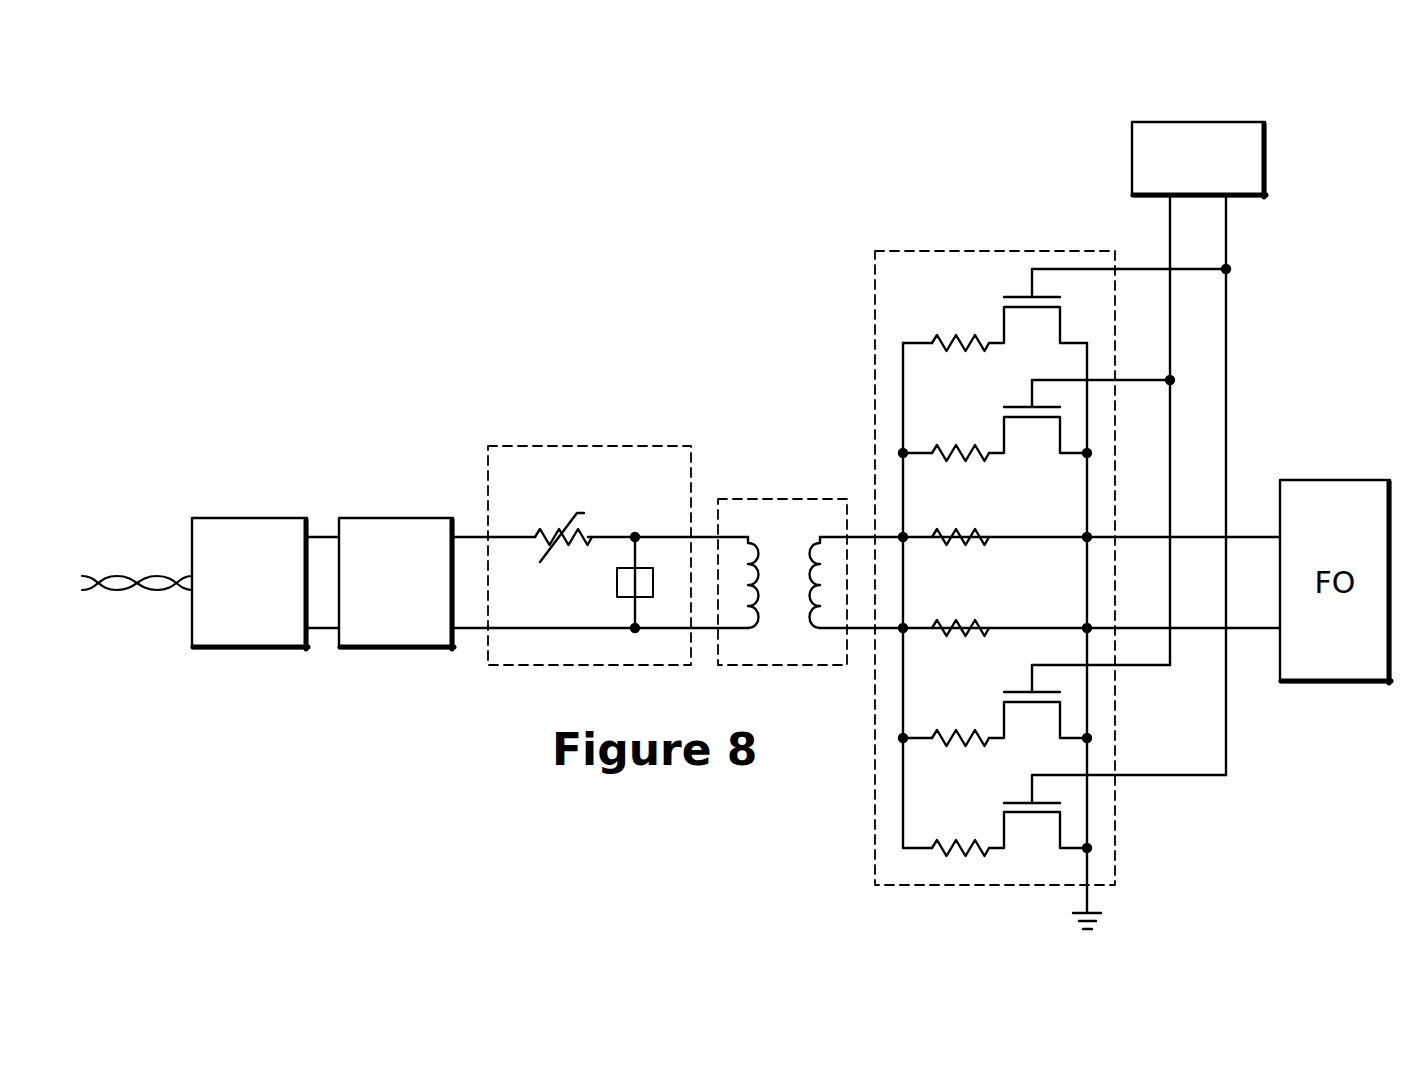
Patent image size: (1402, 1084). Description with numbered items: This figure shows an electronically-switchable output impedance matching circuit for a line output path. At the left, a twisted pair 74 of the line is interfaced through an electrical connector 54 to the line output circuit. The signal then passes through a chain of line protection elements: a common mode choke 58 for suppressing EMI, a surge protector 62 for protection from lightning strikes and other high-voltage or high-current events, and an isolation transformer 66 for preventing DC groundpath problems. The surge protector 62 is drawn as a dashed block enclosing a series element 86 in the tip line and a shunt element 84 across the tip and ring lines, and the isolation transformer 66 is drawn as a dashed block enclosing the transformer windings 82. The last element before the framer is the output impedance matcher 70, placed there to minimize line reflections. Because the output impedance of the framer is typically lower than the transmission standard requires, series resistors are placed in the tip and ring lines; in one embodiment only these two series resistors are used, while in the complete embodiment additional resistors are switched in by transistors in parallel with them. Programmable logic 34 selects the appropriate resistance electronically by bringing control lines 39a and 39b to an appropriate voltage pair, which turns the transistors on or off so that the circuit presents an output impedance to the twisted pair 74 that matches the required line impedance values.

The twisted pair 74 is at (121, 576).
The electrical connector 54 is at (263, 597).
The common mode choke 58 is at (410, 597).
The surge protector 62 is at (600, 523).
The varistor 86 is at (549, 525).
The protection element 84 is at (617, 583).
The isolation transformer 66 is at (782, 552).
The transformer 82 is at (766, 597).
The output impedance matcher 70 is at (912, 251).
The programmable logic 34 is at (1182, 168).
The control line 39a is at (1170, 226).
The control line 39b is at (1226, 226).